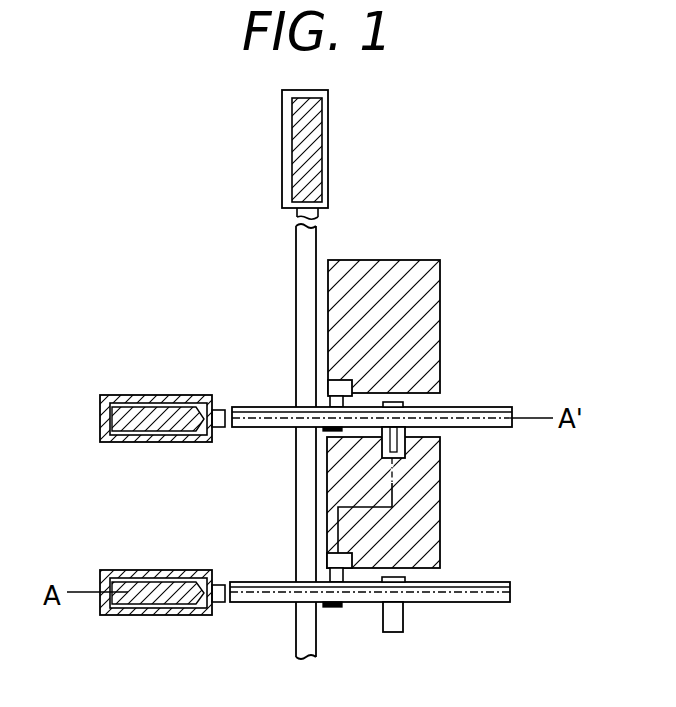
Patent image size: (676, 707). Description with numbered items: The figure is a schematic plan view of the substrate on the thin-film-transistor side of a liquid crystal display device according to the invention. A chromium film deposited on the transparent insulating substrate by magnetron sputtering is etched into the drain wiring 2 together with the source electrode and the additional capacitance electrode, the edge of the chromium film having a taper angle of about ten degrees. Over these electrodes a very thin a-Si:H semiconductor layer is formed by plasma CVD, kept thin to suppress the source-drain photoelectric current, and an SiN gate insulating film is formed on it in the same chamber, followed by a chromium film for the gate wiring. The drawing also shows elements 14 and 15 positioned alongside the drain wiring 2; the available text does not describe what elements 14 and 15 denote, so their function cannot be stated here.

The drain wiring 2 is at (296, 290).
The counterweight 14 is at (328, 131).
The gripper 15 is at (148, 570).